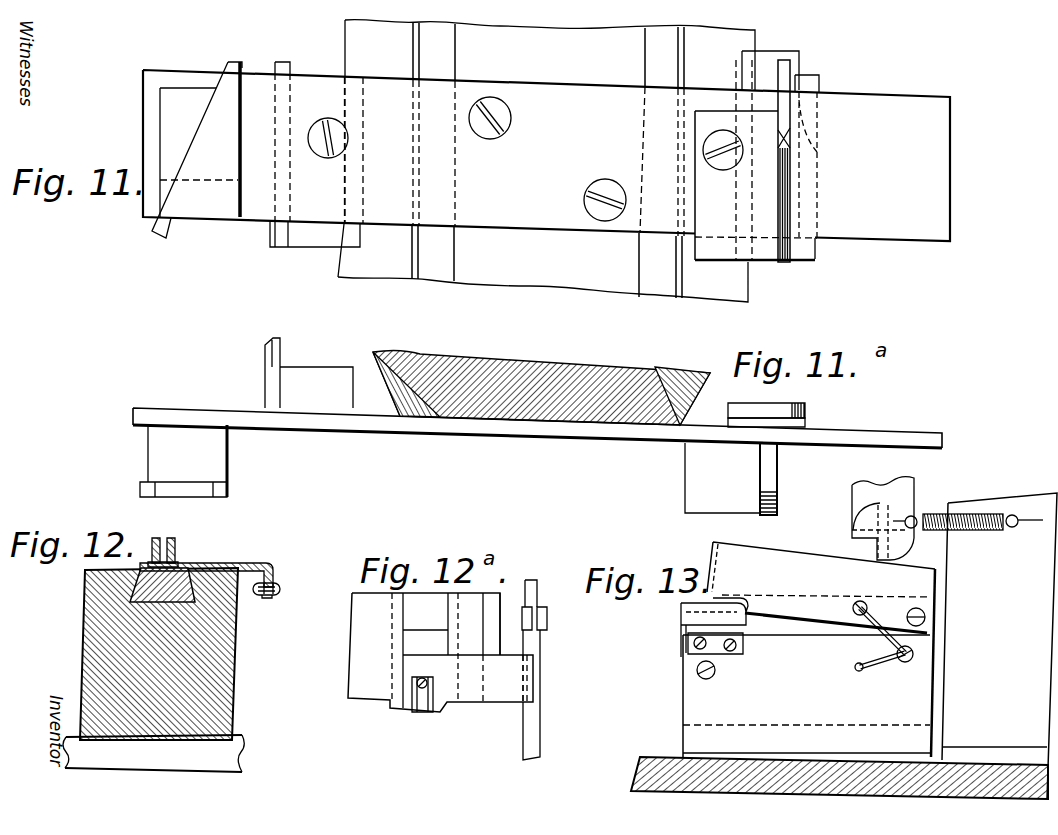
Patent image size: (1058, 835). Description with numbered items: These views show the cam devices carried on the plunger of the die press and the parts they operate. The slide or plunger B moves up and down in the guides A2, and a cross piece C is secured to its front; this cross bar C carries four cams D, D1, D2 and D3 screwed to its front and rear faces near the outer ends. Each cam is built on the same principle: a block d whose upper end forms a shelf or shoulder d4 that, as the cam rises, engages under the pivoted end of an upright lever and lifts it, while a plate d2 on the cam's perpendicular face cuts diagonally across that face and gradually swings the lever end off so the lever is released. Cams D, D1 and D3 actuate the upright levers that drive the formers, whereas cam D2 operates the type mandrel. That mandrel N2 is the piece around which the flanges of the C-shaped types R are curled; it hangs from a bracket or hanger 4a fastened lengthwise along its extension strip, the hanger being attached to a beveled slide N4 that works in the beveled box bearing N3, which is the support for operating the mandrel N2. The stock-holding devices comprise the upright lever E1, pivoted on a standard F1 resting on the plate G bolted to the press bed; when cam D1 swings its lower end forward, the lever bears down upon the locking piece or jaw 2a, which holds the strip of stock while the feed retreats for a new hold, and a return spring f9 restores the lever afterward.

In FIG. 11, the cross piece C is at (515, 210).
In FIG. 11A, the cross piece C is at (457, 430).
In FIG. 11, the block d is at (171, 92).
In FIG. 11A, the block d is at (220, 456).
In FIG. 11, the shelf or shoulder d4 is at (190, 88).
In FIG. 11A, the shelf or shoulder d4 is at (730, 420).
In FIG. 11, the cam D2 is at (240, 62).
In FIG. 11A, the cam D2 is at (203, 484).
In FIG. 11, the cam D3 is at (292, 63).
In FIG. 11A, the cam D3 is at (265, 385).
In FIG. 11, the plate d2 is at (212, 197).
In FIG. 11, the slide or plunger B is at (527, 267).
In FIG. 11A, the slide or plunger B is at (589, 364).
In FIG. 11, the guides A2 is at (358, 272).
In FIG. 11A, the guides A2 is at (381, 352).
In FIG. 11, the cam D is at (763, 185).
In FIG. 11A, the cam D is at (765, 474).
In FIG. 11, the cam D1 is at (800, 57).
In FIG. 11A, the cam D1 is at (807, 410).
In FIG. 12, the beveled box bearing N3 is at (215, 660).
In FIG. 12A, the beveled box bearing N3 is at (367, 690).
In FIG. 12, the beveled slide N4 is at (180, 570).
In FIG. 12A, the beveled slide N4 is at (417, 640).
In FIG. 12, the bracket or hanger 4a is at (255, 565).
In FIG. 12A, the bracket or hanger 4a is at (510, 693).
In FIG. 12, the mandrel N2 is at (273, 580).
In FIG. 12A, the mandrel N2 is at (541, 648).
In FIG. 12, the C-shaped types R is at (276, 596).
In FIG. 12A, the C-shaped types R is at (547, 616).
In FIG. 12, the plate G is at (225, 752).
In FIG. 13, the plate G is at (658, 766).
In FIG. 13, the upright or standard F1 is at (965, 683).
In FIG. 13, the locking piece or jaw 2a is at (784, 556).
In FIG. 13, the upright lever E1 is at (907, 492).
In FIG. 13, the spring f9 is at (965, 533).